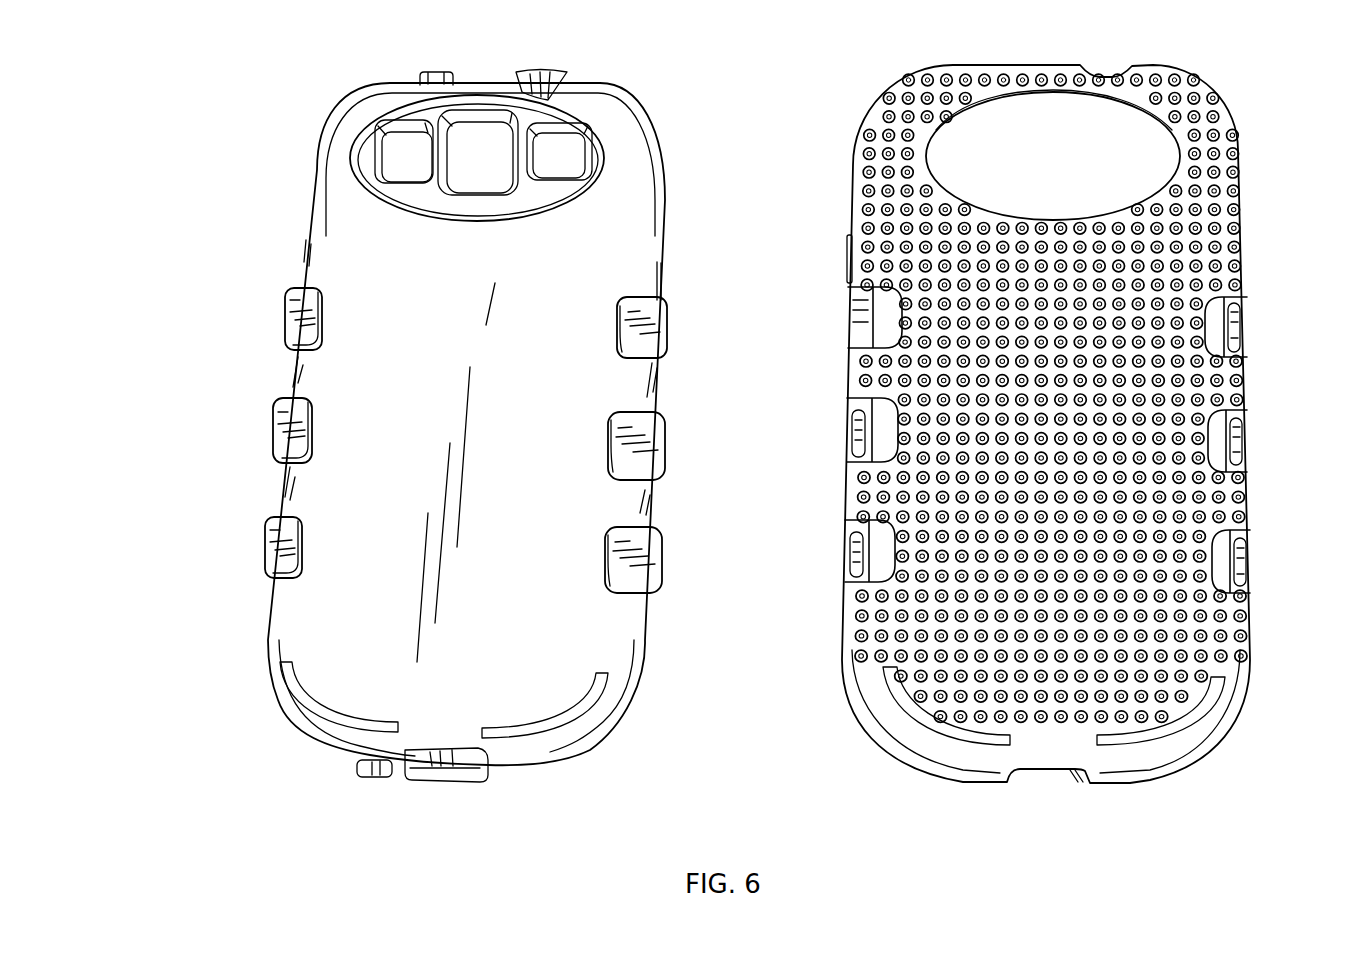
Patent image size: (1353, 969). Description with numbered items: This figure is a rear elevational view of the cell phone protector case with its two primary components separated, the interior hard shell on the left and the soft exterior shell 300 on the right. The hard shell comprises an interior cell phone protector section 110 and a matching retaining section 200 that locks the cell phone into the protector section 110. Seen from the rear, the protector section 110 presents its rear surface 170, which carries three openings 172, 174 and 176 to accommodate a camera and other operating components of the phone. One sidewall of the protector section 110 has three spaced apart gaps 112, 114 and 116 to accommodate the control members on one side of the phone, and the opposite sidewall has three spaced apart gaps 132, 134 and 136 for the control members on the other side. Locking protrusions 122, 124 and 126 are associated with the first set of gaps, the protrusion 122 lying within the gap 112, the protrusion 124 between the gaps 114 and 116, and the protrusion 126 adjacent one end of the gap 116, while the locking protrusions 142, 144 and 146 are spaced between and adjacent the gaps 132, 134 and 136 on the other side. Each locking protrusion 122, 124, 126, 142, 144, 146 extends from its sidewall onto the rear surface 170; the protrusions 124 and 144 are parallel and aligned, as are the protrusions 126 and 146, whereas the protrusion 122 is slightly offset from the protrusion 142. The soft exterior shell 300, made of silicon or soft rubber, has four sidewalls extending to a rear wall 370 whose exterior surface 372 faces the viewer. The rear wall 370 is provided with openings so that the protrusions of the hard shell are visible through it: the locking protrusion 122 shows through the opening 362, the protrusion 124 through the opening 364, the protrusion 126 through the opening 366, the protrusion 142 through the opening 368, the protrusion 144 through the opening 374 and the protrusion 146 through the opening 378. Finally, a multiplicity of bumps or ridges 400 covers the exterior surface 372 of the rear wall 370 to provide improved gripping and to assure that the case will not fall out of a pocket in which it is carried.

The interior cell phone protector section 110 is at (618, 70).
The gap 112 is at (664, 270).
The gap 114 is at (656, 380).
The gap 116 is at (652, 500).
The locking protrusion 122 is at (664, 328).
The locking protrusion 124 is at (660, 443).
The locking protrusion 126 is at (658, 562).
The gap 132 is at (307, 250).
The gap 134 is at (292, 368).
The gap 136 is at (282, 493).
The locking protrusion 142 is at (291, 322).
The locking protrusion 144 is at (279, 436).
The locking protrusion 146 is at (271, 555).
The rear surface 170 is at (460, 355).
The opening 172 is at (555, 147).
The opening 174 is at (480, 140).
The opening 176 is at (400, 148).
The retaining section 200 is at (230, 392).
The soft exterior shell 300 is at (1258, 257).
The opening 362 is at (1222, 330).
The opening 364 is at (1215, 443).
The opening 366 is at (1218, 555).
The opening 368 is at (875, 308).
The rear wall 370 is at (1175, 392).
The exterior surface 372 is at (1157, 500).
The opening 374 is at (857, 425).
The opening 378 is at (868, 545).
The bumps or ridges 400 is at (1140, 228).